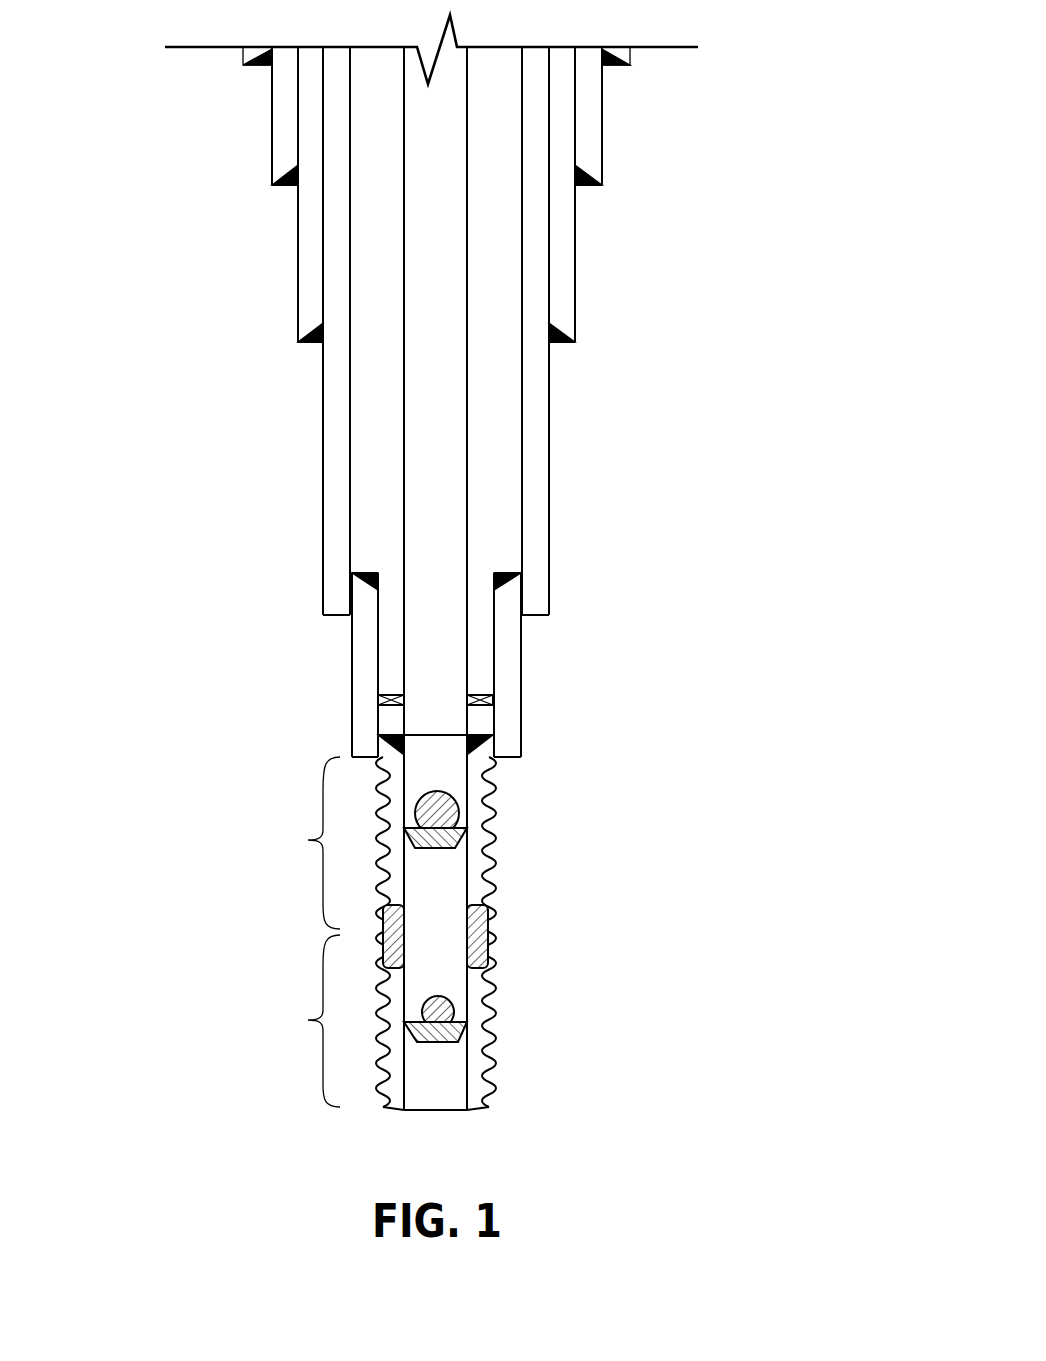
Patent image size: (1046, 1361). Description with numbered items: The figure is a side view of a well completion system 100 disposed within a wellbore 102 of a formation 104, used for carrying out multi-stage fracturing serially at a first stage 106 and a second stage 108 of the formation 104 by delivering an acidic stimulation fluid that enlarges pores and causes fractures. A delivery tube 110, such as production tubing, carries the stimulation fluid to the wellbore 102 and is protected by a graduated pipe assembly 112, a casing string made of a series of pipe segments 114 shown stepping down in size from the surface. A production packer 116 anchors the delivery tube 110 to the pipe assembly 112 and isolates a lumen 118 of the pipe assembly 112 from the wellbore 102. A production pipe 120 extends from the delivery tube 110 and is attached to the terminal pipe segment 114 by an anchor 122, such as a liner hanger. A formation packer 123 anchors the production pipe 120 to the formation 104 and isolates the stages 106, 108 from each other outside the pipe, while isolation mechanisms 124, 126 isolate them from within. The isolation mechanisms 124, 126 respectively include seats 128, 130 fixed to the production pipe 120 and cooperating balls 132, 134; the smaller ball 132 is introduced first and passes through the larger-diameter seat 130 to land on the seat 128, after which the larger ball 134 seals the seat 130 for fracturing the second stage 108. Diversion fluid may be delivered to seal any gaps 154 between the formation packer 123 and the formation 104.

The well completion system 100 is at (718, 146).
The wellbore 102 is at (480, 770).
The formation 104 is at (217, 861).
The first stage 106 is at (297, 1021).
The second stage 108 is at (296, 843).
The delivery tube 110 is at (467, 258).
The graduated pipe assembly 112 is at (600, 377).
The pipe segments 114 is at (243, 62).
The production packer 116 is at (483, 693).
The lumen 118 is at (498, 467).
The production pipe 120 is at (488, 1103).
The anchor 122 is at (482, 733).
The formation packer 123 is at (490, 932).
The isolation mechanism 124 is at (480, 1007).
The isolation mechanism 126 is at (472, 799).
The seat 128 is at (452, 1043).
The seat 130 is at (455, 848).
The ball 132 is at (445, 996).
The ball 134 is at (427, 798).
The gaps 154 is at (383, 934).